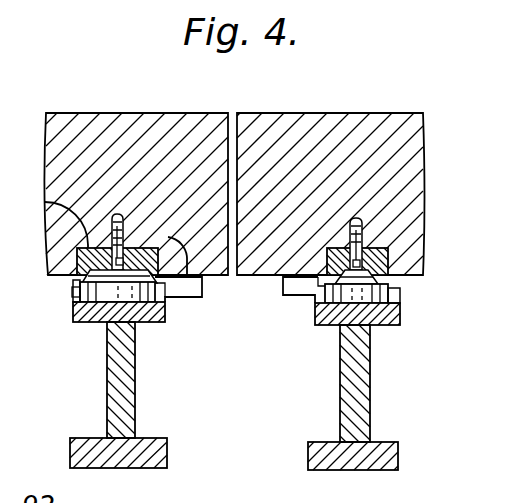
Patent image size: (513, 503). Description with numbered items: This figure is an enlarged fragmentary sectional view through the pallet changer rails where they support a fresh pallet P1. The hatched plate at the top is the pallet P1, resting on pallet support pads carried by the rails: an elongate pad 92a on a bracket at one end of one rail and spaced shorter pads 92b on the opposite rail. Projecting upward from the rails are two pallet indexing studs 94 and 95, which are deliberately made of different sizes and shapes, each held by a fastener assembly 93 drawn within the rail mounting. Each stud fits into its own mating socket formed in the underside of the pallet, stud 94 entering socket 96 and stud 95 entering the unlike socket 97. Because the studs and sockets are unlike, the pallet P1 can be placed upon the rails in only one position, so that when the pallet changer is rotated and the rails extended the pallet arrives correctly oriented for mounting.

The fresh pallet P1 is at (113, 106).
The mating socket 96 is at (47, 206).
The elongate pad 92a is at (187, 248).
The shorter pads 92b is at (292, 280).
The bolt and nut 93 is at (117, 248).
The mating socket 97 is at (383, 250).
The pallet indexing stud 94 is at (98, 300).
The pallet indexing stud 95 is at (338, 303).